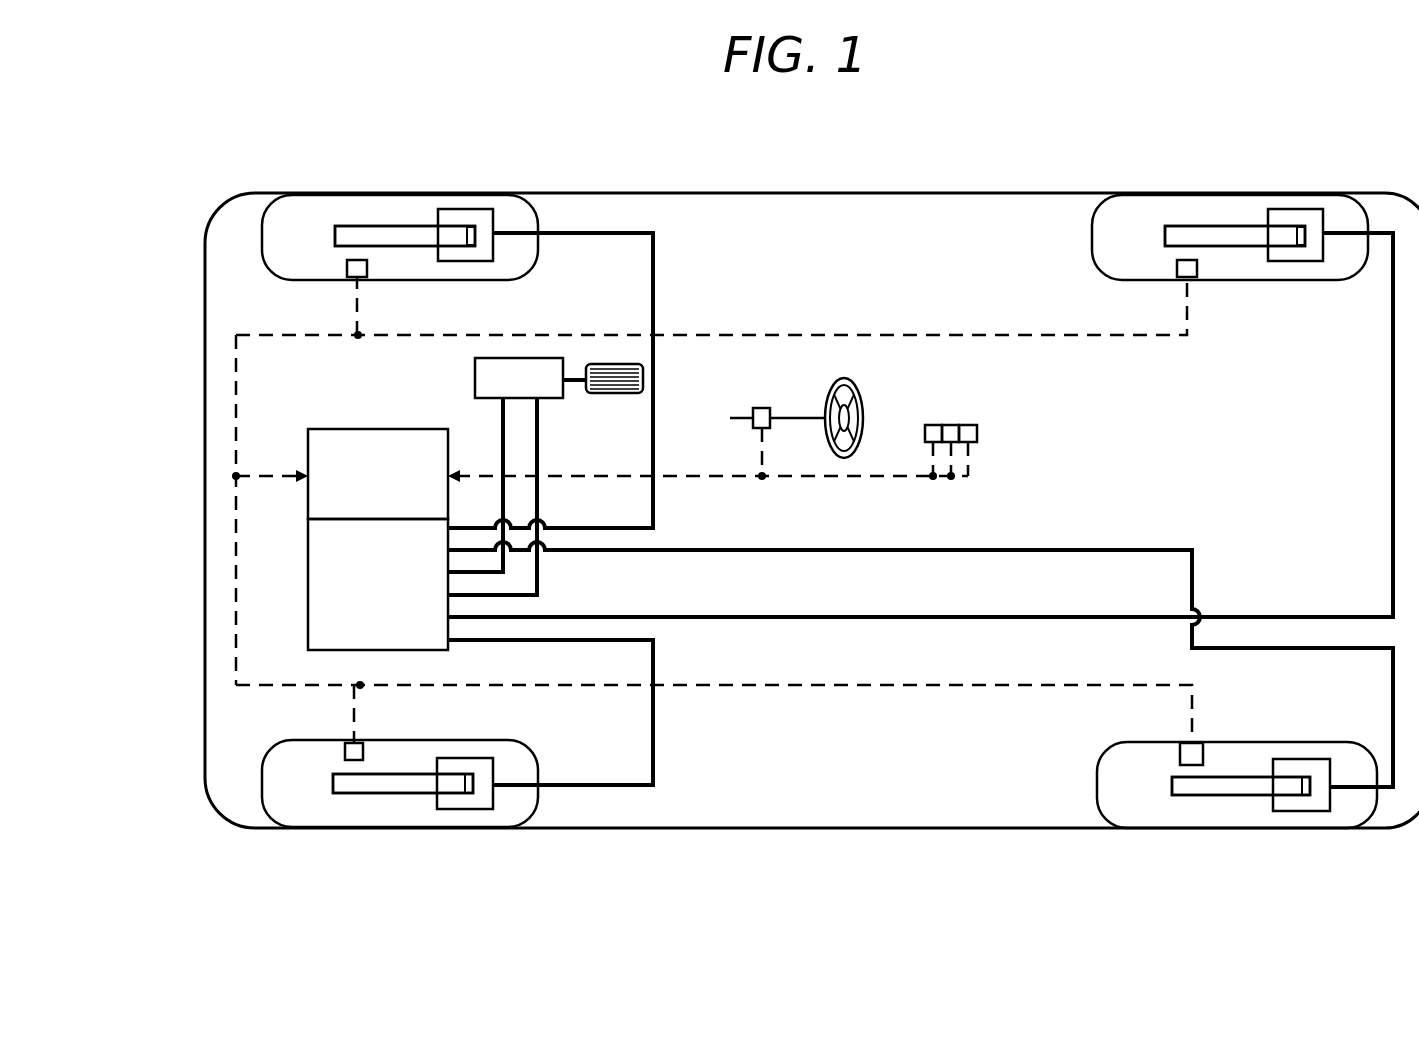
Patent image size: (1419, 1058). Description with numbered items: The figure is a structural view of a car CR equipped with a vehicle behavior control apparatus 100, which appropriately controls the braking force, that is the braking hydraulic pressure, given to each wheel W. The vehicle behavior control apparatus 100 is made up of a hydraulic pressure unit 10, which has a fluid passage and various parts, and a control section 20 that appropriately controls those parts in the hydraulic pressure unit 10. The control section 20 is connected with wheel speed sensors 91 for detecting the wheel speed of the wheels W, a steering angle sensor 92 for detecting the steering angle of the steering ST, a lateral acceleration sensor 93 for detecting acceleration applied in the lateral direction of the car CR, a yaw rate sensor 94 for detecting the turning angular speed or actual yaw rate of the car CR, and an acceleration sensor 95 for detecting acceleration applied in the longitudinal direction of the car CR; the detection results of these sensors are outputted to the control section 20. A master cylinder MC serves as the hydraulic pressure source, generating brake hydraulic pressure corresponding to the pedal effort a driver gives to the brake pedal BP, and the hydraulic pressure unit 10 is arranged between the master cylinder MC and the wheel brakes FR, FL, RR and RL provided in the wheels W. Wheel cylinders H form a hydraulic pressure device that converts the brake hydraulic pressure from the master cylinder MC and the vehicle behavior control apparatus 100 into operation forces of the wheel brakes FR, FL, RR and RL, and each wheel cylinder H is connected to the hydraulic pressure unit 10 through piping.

The hydraulic pressure unit 10 is at (298, 548).
The control section 20 is at (308, 455).
The wheel speed sensor 91 is at (367, 268).
The steering angle sensor 92 is at (758, 408).
The lateral acceleration sensor 93 is at (933, 425).
The yaw rate sensor 94 is at (951, 425).
The acceleration sensor 95 is at (977, 433).
The vehicle behavior control apparatus 100 is at (647, 510).
The car CR is at (845, 184).
The wheel W is at (400, 205).
The wheel cylinder H is at (463, 215).
The wheel brake FR is at (356, 232).
The wheel brake RR is at (1186, 232).
The wheel brake FL is at (353, 785).
The wheel brake RL is at (1193, 795).
The master cylinder MC is at (475, 377).
The brake pedal BP is at (621, 394).
The steering ST is at (863, 405).